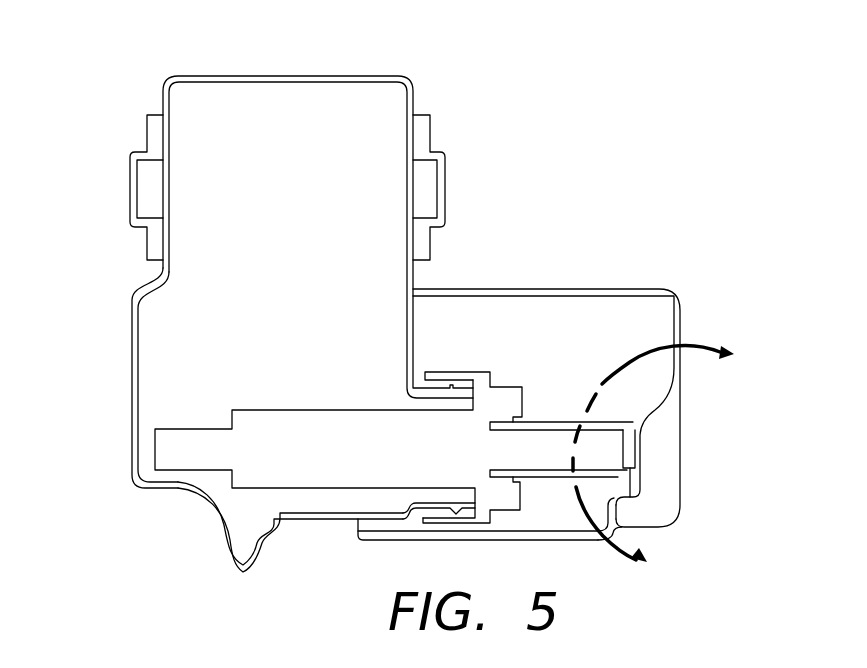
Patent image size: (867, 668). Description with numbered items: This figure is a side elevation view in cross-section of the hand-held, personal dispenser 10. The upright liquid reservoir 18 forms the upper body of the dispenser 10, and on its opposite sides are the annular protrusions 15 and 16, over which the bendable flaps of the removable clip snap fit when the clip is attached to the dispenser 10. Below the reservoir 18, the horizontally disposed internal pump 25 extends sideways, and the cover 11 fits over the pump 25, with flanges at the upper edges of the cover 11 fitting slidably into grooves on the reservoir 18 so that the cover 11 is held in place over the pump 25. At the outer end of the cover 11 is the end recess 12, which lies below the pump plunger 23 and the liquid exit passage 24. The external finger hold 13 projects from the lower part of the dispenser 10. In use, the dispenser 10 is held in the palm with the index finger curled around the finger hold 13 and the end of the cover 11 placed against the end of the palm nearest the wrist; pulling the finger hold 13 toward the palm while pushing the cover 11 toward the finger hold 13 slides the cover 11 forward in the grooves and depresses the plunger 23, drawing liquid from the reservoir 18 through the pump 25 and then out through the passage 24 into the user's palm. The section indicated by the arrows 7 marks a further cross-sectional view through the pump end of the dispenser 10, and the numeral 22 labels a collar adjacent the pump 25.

The dispenser 10 is at (586, 190).
The cover 11 is at (637, 289).
The end recess 12 is at (645, 509).
The finger hold 13 is at (235, 572).
The annular protrusion 15 is at (445, 180).
The annular protrusion 16 is at (133, 180).
The liquid reservoir 18 is at (288, 117).
The collar 22 is at (485, 382).
The pump plunger 23 is at (597, 444).
The liquid exit passage 24 is at (635, 470).
The pump 25 is at (318, 456).
The section line 7- 7 is at (667, 467).